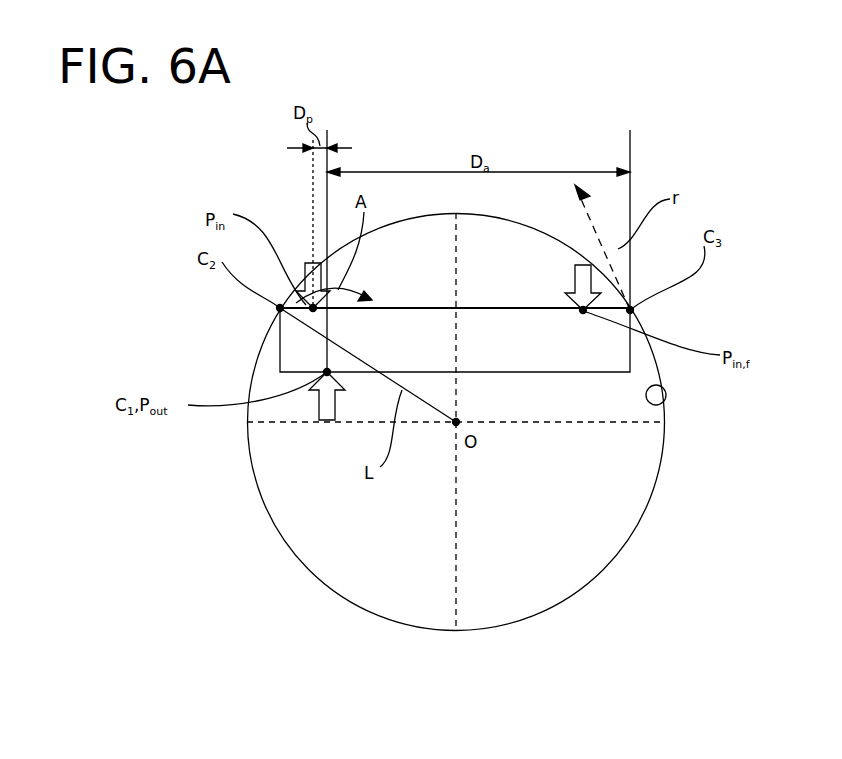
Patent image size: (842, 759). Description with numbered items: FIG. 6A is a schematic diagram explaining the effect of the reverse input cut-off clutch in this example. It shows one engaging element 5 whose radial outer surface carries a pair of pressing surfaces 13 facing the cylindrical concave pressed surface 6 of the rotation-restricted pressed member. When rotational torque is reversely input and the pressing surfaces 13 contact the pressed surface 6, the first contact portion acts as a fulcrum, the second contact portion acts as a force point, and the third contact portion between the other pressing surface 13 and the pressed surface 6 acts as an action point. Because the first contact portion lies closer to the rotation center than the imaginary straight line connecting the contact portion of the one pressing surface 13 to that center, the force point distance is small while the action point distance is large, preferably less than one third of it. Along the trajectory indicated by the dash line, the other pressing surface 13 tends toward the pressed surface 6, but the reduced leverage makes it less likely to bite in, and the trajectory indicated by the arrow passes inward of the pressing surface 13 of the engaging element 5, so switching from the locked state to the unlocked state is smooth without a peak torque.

The pressing surface 13 is at (280, 308).
The engaging element 5 is at (549, 373).
The pressed surface 6 is at (666, 398).